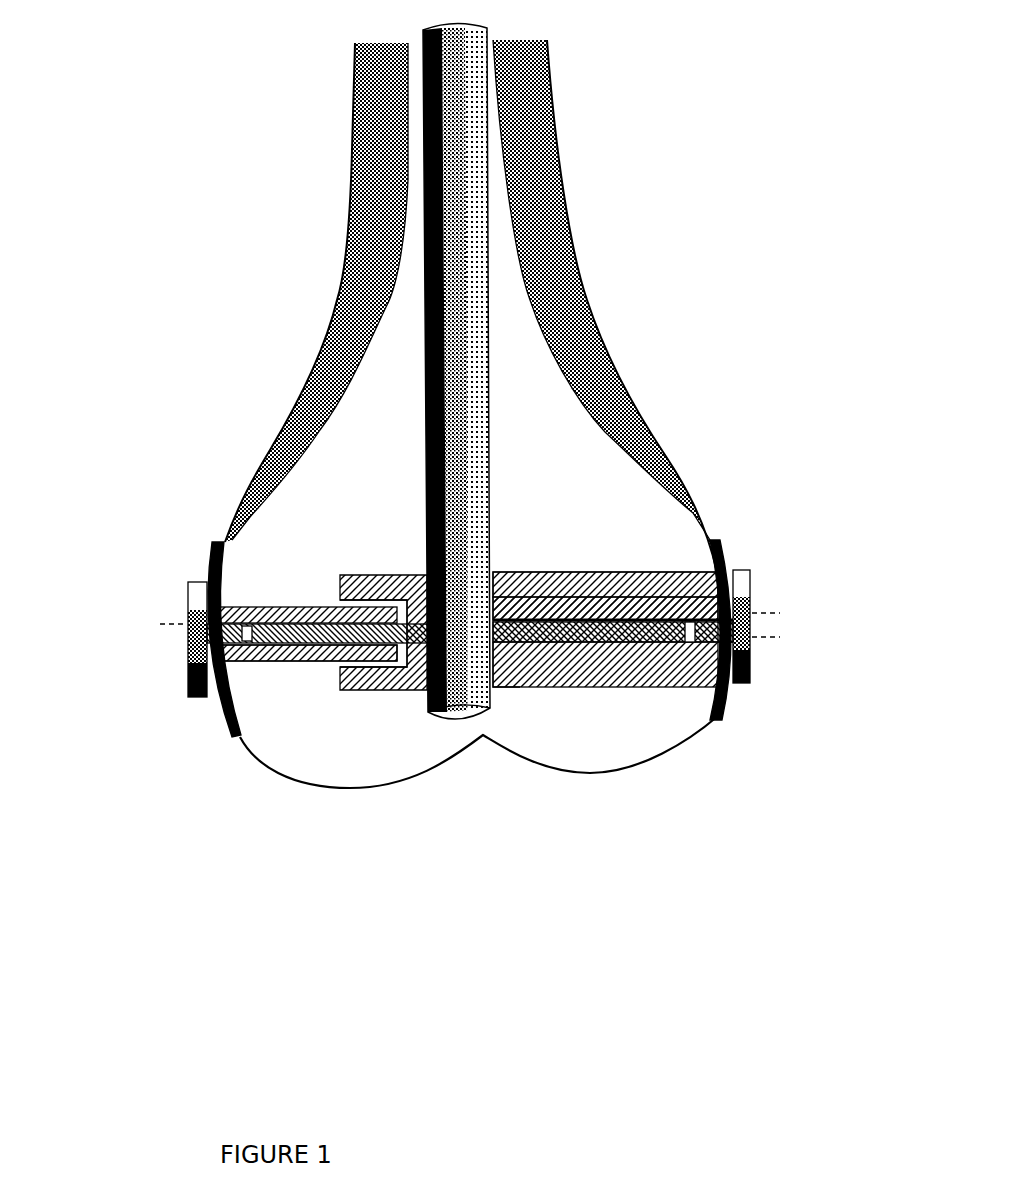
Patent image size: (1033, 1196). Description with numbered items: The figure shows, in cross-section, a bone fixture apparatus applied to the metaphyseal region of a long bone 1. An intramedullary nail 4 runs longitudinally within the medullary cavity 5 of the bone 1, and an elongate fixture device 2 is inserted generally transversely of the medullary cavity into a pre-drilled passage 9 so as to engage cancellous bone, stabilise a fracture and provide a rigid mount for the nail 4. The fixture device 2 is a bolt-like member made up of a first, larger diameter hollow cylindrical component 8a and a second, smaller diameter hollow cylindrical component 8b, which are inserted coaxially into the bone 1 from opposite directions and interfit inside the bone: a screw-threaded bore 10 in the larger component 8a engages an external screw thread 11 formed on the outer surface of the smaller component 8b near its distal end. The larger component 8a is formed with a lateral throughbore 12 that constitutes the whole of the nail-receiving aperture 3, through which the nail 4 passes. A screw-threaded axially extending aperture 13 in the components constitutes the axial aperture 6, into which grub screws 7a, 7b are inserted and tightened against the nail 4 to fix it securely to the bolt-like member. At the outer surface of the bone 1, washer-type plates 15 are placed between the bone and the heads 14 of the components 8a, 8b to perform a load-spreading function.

The long bone 1 is at (533, 153).
The fixture device 2 is at (618, 535).
The aperture 3 is at (522, 573).
The intramedullary nail 4 is at (423, 208).
The medullary cavity 5 is at (502, 262).
The axial aperture 6 is at (683, 601).
The grub screw 7a is at (597, 645).
The grub screw 7b is at (187, 647).
The first hollow cylindrical component 8a is at (660, 571).
The second hollow cylindrical component 8b is at (288, 607).
The pre-drilled passage 9 is at (650, 690).
The screw-threaded bore 10 is at (345, 690).
The external screw thread 11 is at (330, 588).
The lateral throughbore 12 is at (500, 668).
The screw-threaded axially extending aperture 13 is at (287, 662).
The head 14 is at (195, 594).
The washer-type plate 15 is at (225, 722).